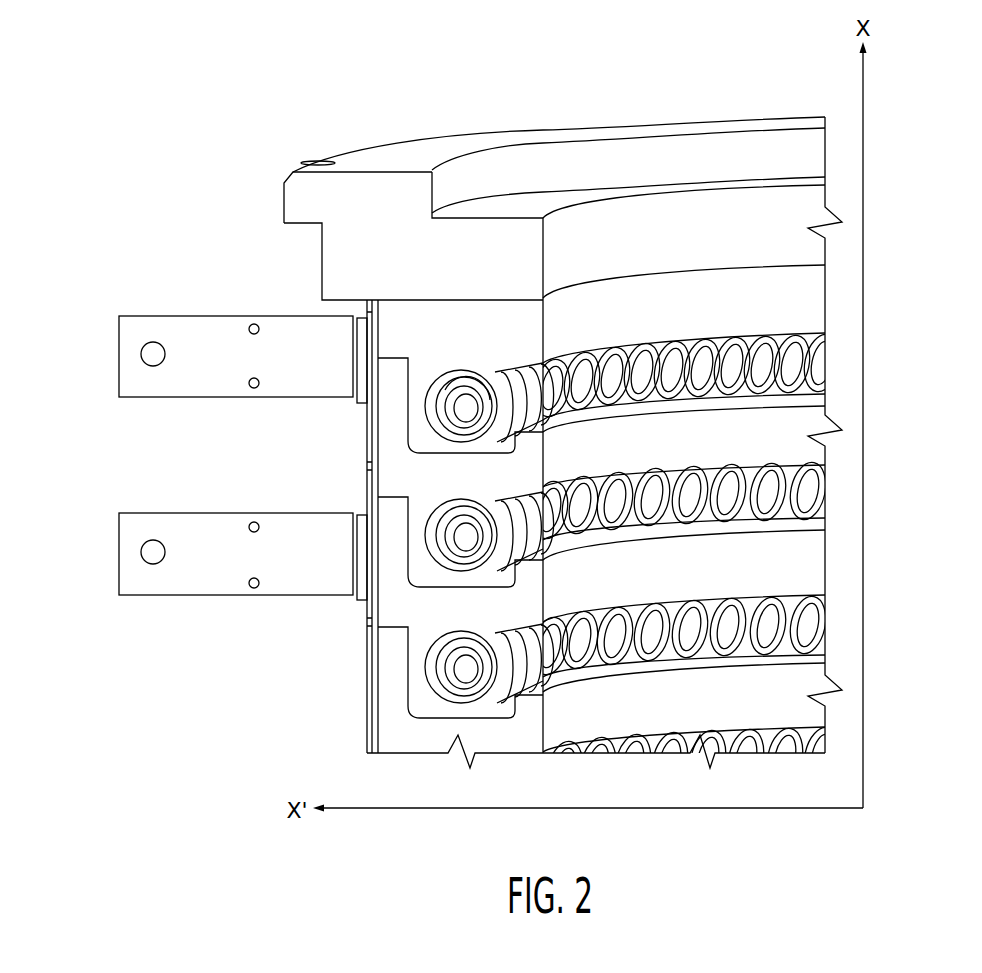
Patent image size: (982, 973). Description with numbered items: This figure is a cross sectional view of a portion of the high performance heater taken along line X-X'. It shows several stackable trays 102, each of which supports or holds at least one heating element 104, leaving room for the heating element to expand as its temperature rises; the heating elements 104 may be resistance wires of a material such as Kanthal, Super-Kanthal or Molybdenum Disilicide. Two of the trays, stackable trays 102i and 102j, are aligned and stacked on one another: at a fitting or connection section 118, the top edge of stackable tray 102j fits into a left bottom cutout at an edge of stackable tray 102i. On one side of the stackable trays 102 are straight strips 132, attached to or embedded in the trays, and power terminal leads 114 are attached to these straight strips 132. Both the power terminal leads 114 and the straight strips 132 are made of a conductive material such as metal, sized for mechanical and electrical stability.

The stackable tray 102 is at (412, 403).
The stackable tray 102i is at (477, 487).
The stackable tray 102j is at (477, 620).
The heating element 104 is at (428, 373).
The power terminal lead 114 is at (140, 597).
The fitting or connection section 118 is at (385, 478).
The straight strip 132 is at (365, 635).